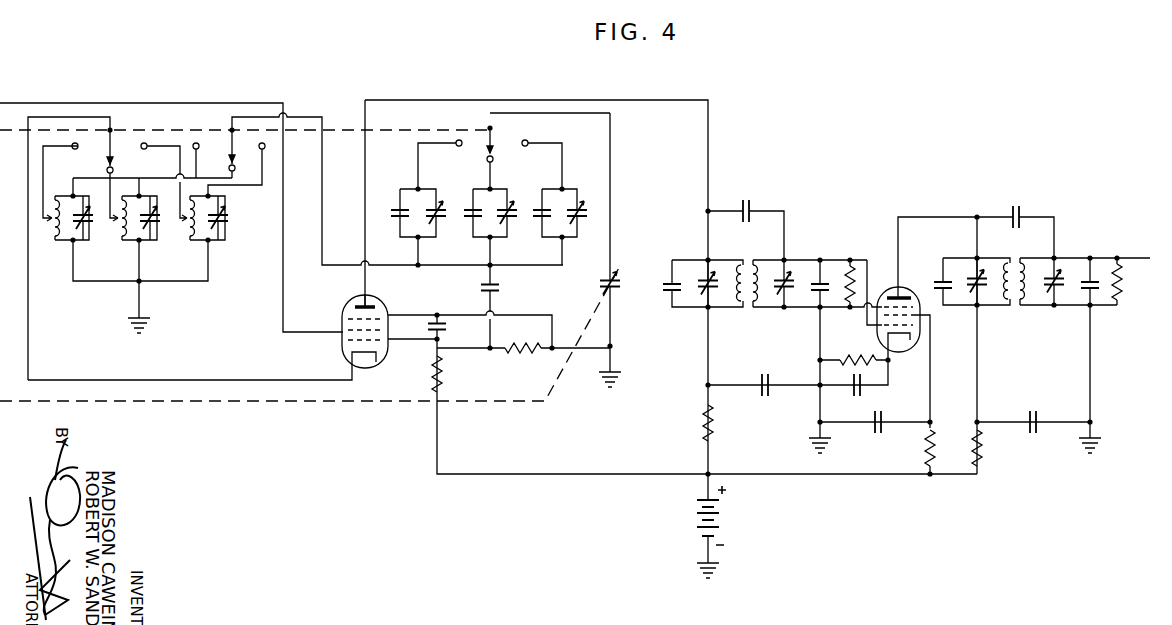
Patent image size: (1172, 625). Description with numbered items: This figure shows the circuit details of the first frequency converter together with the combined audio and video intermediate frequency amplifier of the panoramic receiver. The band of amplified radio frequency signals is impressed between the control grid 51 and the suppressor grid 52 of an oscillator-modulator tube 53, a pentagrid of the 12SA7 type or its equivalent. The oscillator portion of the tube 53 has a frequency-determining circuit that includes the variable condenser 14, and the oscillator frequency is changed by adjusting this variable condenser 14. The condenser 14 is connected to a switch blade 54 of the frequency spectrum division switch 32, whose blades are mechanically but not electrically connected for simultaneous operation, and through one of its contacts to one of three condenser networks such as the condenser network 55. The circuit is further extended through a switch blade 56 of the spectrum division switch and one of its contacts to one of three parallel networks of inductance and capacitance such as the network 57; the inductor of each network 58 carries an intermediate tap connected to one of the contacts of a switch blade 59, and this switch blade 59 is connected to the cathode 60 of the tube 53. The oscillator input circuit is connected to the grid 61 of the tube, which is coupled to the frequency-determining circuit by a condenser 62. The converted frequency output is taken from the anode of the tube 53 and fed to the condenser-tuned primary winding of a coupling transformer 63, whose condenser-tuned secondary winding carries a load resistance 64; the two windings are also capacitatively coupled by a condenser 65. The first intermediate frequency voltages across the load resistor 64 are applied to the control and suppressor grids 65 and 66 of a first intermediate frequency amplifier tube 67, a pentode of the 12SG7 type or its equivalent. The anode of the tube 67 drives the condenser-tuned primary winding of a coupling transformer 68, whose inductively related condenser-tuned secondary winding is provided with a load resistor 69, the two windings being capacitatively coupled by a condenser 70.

The variable condenser 14 is at (613, 292).
The frequency spectrum division switch 32 is at (337, 125).
The control grid 51 is at (350, 331).
The suppressor grid 52 is at (348, 316).
The oscillator-modulator tube 53 is at (352, 298).
The switch blade 54 is at (492, 142).
The condenser network 55 is at (482, 228).
The switch blade 56 is at (232, 140).
The parallel network of inductance and capacitance 57 is at (149, 234).
The inductance coil 58 is at (125, 237).
The switch blade 59 is at (112, 141).
The cathode 60 is at (345, 366).
The grid 61 is at (376, 347).
The condenser 62 is at (503, 290).
The coupling transformer 63 is at (747, 307).
The load resistance 64 is at (851, 266).
The condenser 65 is at (750, 207).
The suppressor grid 66 is at (869, 300).
The first intermediate frequency amplifier tube 67 is at (897, 286).
The coupling transformer 68 is at (1017, 305).
The load resistor 69 is at (1122, 278).
The condenser 70 is at (1017, 203).